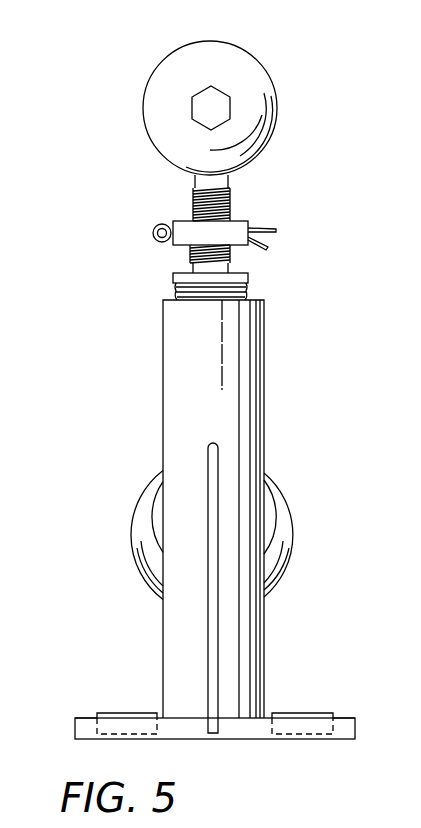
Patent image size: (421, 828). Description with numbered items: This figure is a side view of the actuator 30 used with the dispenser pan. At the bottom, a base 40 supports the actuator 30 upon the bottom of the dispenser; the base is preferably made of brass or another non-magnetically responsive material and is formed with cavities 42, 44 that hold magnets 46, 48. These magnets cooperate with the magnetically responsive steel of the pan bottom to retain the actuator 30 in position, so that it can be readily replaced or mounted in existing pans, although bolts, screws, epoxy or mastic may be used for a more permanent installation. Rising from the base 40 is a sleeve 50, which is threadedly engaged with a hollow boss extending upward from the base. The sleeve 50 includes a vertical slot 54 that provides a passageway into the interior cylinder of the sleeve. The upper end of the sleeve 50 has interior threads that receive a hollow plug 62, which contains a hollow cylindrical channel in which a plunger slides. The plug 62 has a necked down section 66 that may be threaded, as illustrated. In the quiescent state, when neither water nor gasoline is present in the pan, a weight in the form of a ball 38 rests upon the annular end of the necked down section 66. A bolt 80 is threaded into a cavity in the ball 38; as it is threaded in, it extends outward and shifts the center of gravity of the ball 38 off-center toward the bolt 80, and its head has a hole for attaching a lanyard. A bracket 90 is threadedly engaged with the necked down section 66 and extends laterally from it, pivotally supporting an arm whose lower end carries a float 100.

The actuator 30 is at (272, 428).
The ball 38 is at (280, 113).
The base 40 is at (350, 712).
The cavity 42 is at (100, 716).
The cavity 44 is at (330, 712).
The magnet 46 is at (123, 713).
The magnet 48 is at (300, 712).
The sleeve 50 is at (264, 372).
The vertical slot 54 is at (216, 608).
The hollow plug 62 is at (250, 277).
The necked down section 66 is at (231, 205).
The bolt 80 is at (224, 92).
The bracket 90 is at (172, 220).
The float 100 is at (290, 523).